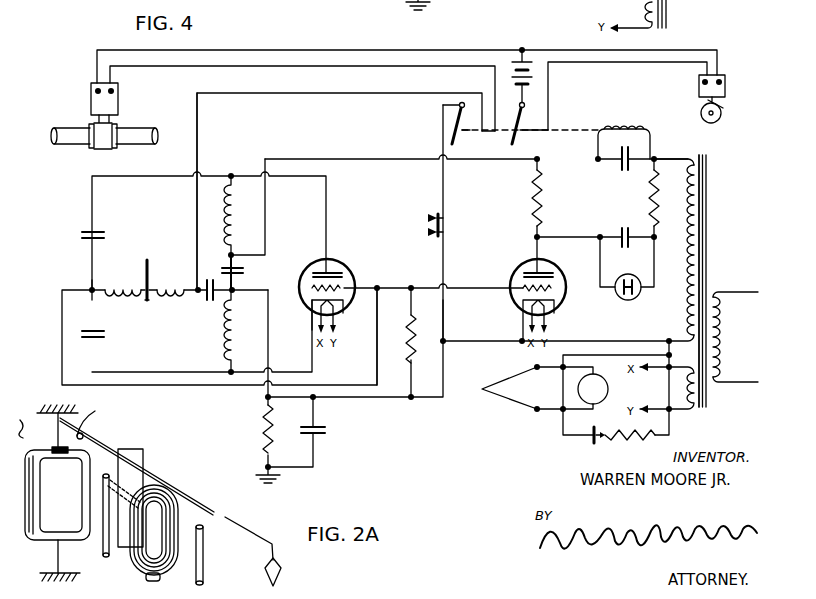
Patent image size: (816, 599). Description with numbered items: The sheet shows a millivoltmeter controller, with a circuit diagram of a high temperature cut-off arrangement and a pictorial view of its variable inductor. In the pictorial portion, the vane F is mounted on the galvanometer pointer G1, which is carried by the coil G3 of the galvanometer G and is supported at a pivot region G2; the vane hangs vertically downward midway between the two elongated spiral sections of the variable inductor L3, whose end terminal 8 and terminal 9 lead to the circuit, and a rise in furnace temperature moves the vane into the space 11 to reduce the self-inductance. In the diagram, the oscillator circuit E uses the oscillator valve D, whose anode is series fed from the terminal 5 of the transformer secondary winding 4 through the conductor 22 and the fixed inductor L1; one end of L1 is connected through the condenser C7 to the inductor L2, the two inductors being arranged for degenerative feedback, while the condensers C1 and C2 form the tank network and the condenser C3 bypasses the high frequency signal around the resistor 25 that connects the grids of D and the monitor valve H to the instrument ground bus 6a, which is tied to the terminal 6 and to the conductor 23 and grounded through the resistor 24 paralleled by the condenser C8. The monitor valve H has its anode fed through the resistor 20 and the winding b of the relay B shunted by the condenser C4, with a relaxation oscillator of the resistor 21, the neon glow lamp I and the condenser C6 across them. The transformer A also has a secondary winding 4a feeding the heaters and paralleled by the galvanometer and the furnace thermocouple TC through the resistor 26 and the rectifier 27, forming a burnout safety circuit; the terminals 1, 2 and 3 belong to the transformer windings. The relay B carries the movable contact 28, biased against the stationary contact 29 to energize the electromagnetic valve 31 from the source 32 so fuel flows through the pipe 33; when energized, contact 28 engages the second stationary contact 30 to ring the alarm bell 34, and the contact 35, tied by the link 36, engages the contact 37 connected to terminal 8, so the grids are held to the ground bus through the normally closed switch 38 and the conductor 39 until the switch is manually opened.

In FIG. 4, the secondary winding terminal 1 is at (721, 336).
In FIG. 4, the secondary winding terminal 2 is at (748, 382).
In FIG. 4, the secondary winding terminal 3 is at (743, 290).
In FIG. 4, the transformer secondary winding 4 is at (684, 258).
In FIG. 4, the secondary winding 4a is at (684, 391).
In FIG. 4, the transformer terminal 5 is at (677, 166).
In FIG. 4, the transformer secondary winding terminal 6 is at (686, 334).
In FIG. 4, the instrument ground bus 6a is at (383, 399).
In FIG. 4, the end terminal of variable inductor 8 is at (196, 286).
In FIG. 2A, the end terminal of variable inductor 8 is at (198, 526).
In FIG. 4, the contact terminal 9 is at (98, 285).
In FIG. 2A, the contact terminal 9 is at (111, 470).
In FIG. 4, the space 11 is at (148, 300).
In FIG. 4, the resistor 20 is at (542, 196).
In FIG. 4, the resistor 21 is at (650, 195).
In FIG. 4, the conductor 22 is at (346, 160).
In FIG. 4, the conductor 23 is at (270, 330).
In FIG. 4, the resistor 24 is at (264, 435).
In FIG. 4, the resistor 25 is at (400, 339).
In FIG. 4, the resistor 26 is at (635, 432).
In FIG. 4, the rectifier 27 is at (598, 443).
In FIG. 4, the movable contact 28 is at (530, 124).
In FIG. 4, the stationary contact 29 is at (510, 138).
In FIG. 4, the second stationary contact 30 is at (529, 136).
In FIG. 4, the electromagnetic valve 31 is at (119, 102).
In FIG. 4, the current source 32 is at (533, 77).
In FIG. 4, the fuel supply pipe 33 is at (75, 128).
In FIG. 4, the alarm bell 34 is at (722, 116).
In FIG. 4, the movable contact 35 is at (451, 128).
In FIG. 4, the link 36 is at (488, 129).
In FIG. 4, the stationary contact 37 is at (466, 139).
In FIG. 4, the normally closed switch 38 is at (428, 222).
In FIG. 4, the conductor 39 is at (447, 311).
In FIG. 4, the transformer A is at (729, 182).
In FIG. 4, the relay B is at (594, 127).
In FIG. 4, the relay winding b is at (621, 136).
In FIG. 4, the condenser C1 is at (81, 238).
In FIG. 4, the condenser C2 is at (106, 335).
In FIG. 4, the condenser C3 is at (208, 306).
In FIG. 4, the condenser C4 is at (624, 172).
In FIG. 4, the condenser C6 is at (627, 223).
In FIG. 4, the condenser C7 is at (244, 273).
In FIG. 4, the condenser C8 is at (324, 430).
In FIG. 4, the oscillator valve D is at (347, 256).
In FIG. 4, the detector circuit E is at (181, 156).
In FIG. 4, the vane F is at (148, 271).
In FIG. 2A, the vane F is at (144, 452).
In FIG. 4, the galvanometer G is at (593, 389).
In FIG. 2A, the galvanometer pointer G1 is at (184, 491).
In FIG. 2A, the reed support G2 is at (62, 444).
In FIG. 2A, the galvanometer coil G3 is at (82, 481).
In FIG. 4, the monitor valve H is at (575, 295).
In FIG. 4, the neon glow lamp I is at (640, 299).
In FIG. 4, the fixed inductor L1 is at (223, 210).
In FIG. 4, the inductor L2 is at (228, 333).
In FIG. 4, the variable inductor L3 is at (126, 290).
In FIG. 2A, the variable inductor L3 is at (128, 569).
In FIG. 4, the furnace thermocouple TC is at (497, 397).